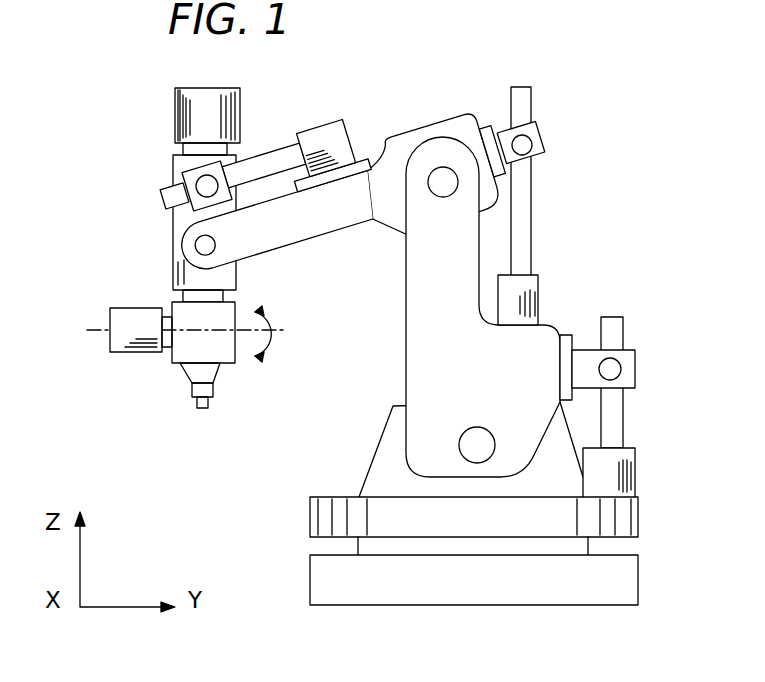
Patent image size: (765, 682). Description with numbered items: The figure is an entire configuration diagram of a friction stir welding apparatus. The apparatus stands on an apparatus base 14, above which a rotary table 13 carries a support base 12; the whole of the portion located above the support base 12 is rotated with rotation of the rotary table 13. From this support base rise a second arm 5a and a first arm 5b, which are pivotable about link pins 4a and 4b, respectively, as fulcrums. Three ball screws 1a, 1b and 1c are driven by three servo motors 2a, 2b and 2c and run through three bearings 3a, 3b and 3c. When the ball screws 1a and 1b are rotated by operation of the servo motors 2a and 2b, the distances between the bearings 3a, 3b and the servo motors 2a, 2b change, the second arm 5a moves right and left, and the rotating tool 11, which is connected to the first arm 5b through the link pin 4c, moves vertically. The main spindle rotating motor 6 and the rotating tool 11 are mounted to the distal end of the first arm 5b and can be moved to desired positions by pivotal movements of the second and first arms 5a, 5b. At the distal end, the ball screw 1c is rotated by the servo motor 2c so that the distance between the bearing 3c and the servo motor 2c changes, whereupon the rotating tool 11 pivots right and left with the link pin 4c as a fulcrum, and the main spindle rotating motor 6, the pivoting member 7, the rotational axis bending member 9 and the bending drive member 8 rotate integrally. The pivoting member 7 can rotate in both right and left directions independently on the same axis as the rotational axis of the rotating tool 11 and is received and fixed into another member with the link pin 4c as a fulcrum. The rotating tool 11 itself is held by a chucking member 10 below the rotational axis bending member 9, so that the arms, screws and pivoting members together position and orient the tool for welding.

The ball screw 1a is at (615, 417).
The ball screw 1b is at (524, 223).
The ball screw 1c is at (271, 152).
The servo motor 2a is at (613, 463).
The servo motor 2b is at (530, 288).
The servo motor 2c is at (330, 138).
The bearing 3a is at (617, 370).
The bearing 3b is at (545, 146).
The bearing 3c is at (193, 168).
The link pin 4a is at (486, 442).
The link pin 4b is at (441, 180).
The link pin 4c is at (216, 245).
The second arm 5a is at (406, 324).
The first arm 5b is at (457, 132).
The main spindle rotating motor 6 is at (178, 103).
The pivoting member 7 is at (173, 223).
The bending drive member 8 is at (117, 322).
The rotational axis bending member 9 is at (224, 350).
The chucking member 10 is at (190, 370).
The rotating tool 11 is at (200, 408).
The support base 12 is at (389, 452).
The rotary table 13 is at (625, 517).
The apparatus base 14 is at (625, 580).